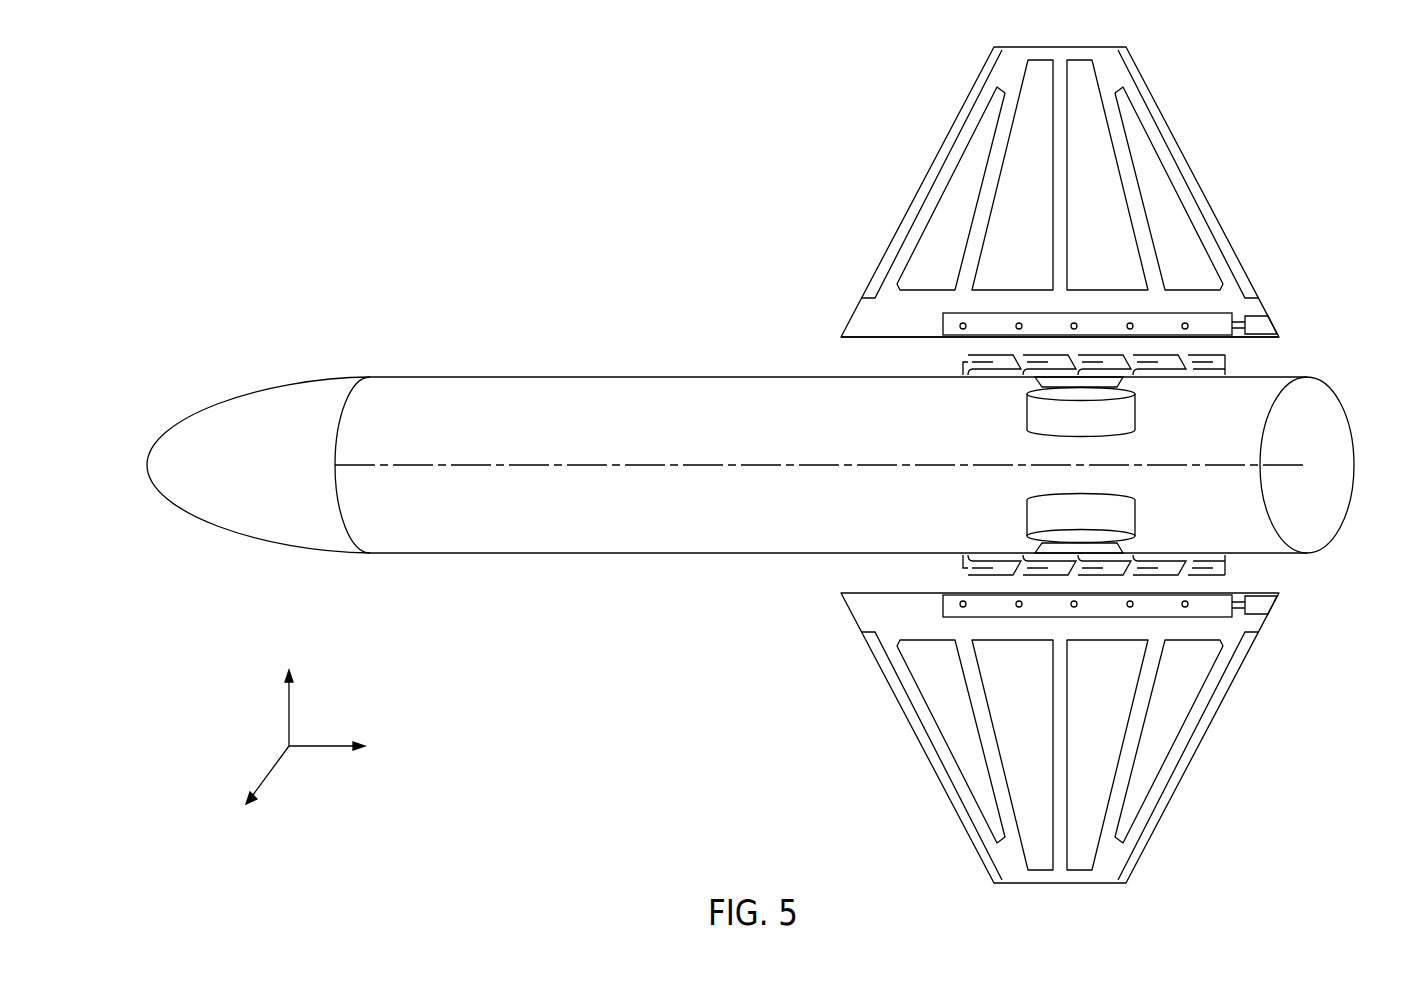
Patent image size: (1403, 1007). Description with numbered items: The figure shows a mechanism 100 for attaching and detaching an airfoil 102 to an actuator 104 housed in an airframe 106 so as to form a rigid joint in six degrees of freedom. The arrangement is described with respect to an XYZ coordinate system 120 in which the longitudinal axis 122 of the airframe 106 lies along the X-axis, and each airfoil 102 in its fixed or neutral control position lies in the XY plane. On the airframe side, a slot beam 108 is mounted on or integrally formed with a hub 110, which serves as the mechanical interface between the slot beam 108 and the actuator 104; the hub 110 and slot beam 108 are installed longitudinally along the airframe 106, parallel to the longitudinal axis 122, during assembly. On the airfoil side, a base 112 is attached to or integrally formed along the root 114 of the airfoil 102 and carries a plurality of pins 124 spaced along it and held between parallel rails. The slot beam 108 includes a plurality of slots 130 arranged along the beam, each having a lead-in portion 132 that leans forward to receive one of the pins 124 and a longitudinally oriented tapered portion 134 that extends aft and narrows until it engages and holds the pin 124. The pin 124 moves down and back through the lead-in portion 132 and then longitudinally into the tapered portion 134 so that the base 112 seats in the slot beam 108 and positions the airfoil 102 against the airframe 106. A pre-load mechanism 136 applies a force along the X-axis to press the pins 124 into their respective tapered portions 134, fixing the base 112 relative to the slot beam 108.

The mechanism 100 is at (750, 465).
The airfoil 102 is at (1050, 208).
The actuator 104 is at (1082, 431).
The airframe 106 is at (520, 376).
The slot beam 108 is at (1006, 368).
The hub 110 is at (1100, 380).
The base 112 is at (943, 325).
The root 114 is at (878, 338).
The XYZ coordinate system 120 is at (289, 718).
The longitudinal axis 122 is at (612, 464).
The pins 124 is at (1080, 721).
The slots 130 is at (1017, 576).
The lead-in portion 132 is at (1076, 574).
The tapered portion 134 is at (1206, 572).
The pre-load mechanism 136 is at (1240, 610).